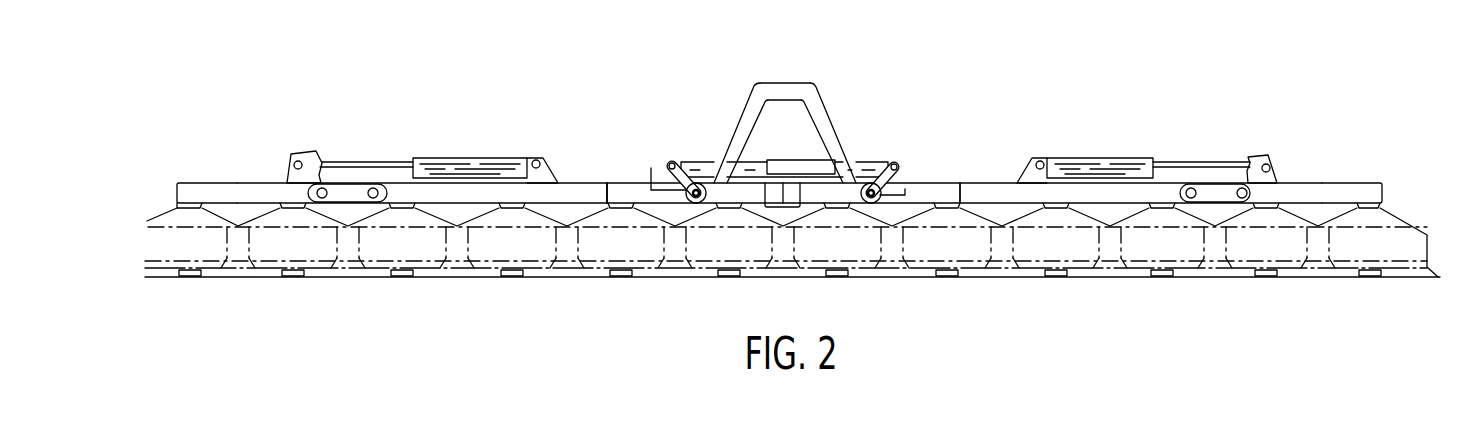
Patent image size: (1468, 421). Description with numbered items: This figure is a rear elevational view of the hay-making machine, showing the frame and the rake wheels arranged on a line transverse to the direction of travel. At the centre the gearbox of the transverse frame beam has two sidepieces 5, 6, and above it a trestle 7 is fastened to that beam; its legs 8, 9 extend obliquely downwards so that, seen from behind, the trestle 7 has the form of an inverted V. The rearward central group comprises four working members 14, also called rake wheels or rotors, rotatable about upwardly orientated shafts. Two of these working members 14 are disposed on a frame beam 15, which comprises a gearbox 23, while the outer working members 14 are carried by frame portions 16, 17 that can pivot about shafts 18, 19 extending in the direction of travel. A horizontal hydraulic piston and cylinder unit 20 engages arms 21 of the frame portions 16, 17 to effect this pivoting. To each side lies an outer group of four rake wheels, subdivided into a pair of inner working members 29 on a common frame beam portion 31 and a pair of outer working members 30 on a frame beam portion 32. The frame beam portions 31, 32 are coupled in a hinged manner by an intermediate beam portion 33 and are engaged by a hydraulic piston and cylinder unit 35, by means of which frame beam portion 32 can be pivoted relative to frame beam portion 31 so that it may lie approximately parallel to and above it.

The sidepiece 5 is at (598, 181).
The sidepiece 6 is at (1011, 198).
The trestle 7 is at (789, 103).
The leg 8 is at (752, 103).
The leg 9 is at (832, 119).
The working member 14 is at (653, 258).
The frame beam 15 is at (959, 181).
The frame portion 16 is at (631, 200).
The frame portion 17 is at (951, 204).
The shaft 18 is at (662, 164).
The shaft 19 is at (905, 189).
The hydraulic piston and cylinder unit 20 is at (873, 160).
The arm 21 is at (676, 162).
The gearbox 23 is at (781, 190).
The inner working member 29 is at (487, 260).
The outer working member 30 is at (270, 259).
The frame beam portion 31 is at (779, 163).
The frame beam portion 32 is at (221, 186).
The intermediate beam portion 33 is at (355, 190).
The hydraulic piston and cylinder unit 35 is at (480, 140).